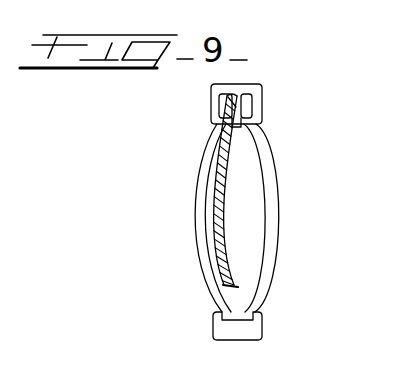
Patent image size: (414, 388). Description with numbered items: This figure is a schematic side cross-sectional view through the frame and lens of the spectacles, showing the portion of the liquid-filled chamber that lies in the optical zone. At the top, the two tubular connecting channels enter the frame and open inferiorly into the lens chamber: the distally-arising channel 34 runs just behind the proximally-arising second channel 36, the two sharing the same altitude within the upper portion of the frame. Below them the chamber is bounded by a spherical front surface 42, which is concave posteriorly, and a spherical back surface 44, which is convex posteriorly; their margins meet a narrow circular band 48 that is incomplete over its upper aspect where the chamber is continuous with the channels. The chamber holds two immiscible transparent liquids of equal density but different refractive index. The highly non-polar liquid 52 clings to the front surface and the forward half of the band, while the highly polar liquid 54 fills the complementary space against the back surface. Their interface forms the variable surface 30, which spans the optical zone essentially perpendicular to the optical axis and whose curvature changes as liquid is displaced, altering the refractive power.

The variable surface 30 is at (211, 207).
The channel 34 is at (248, 103).
The second channel 36 is at (231, 97).
The front surface 42 is at (210, 245).
The back surface 44 is at (264, 258).
The circular band 48 is at (235, 287).
The liquid 52 is at (217, 159).
The liquid 54 is at (242, 170).